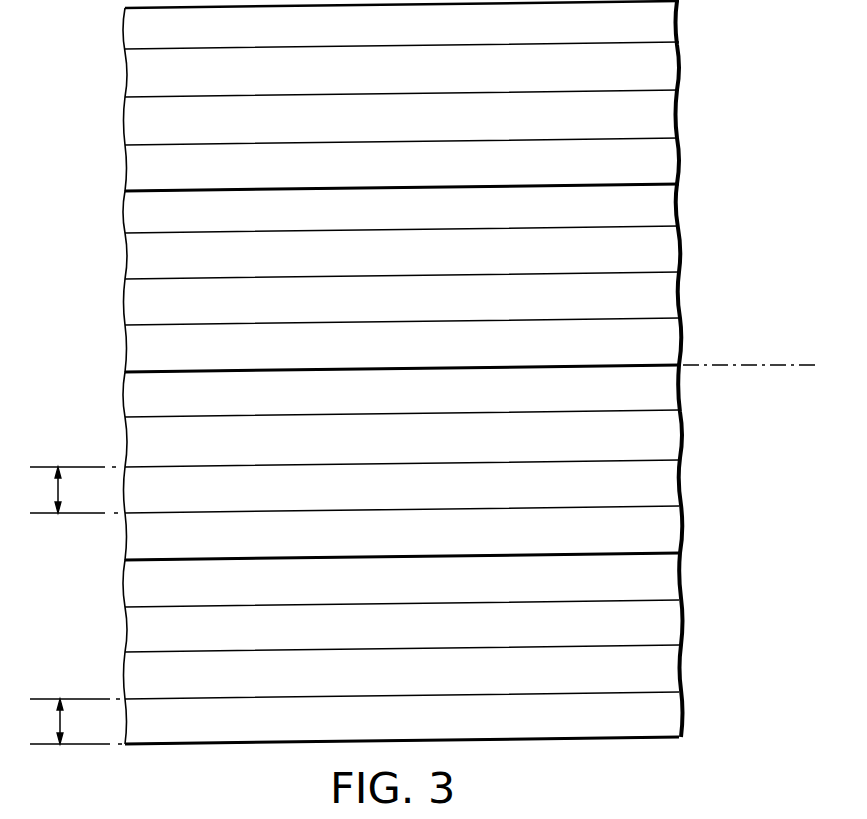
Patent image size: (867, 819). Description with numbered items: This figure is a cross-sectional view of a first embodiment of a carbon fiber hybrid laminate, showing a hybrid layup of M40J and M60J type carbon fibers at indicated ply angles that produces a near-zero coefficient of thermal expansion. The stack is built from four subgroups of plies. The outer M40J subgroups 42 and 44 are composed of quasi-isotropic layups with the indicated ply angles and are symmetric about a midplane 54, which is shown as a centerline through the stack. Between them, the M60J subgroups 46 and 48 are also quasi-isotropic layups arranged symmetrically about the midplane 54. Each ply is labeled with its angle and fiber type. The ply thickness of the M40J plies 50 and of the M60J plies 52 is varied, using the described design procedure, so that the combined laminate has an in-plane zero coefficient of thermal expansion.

The M40J subgroup 42 is at (698, 2).
The M60J subgroup 46 is at (698, 186).
The M60J subgroup 48 is at (698, 375).
The M40J subgroup 44 is at (698, 552).
The M40J plies 50 is at (52, 720).
The M60J plies 52 is at (50, 488).
The midplane 54 is at (766, 367).